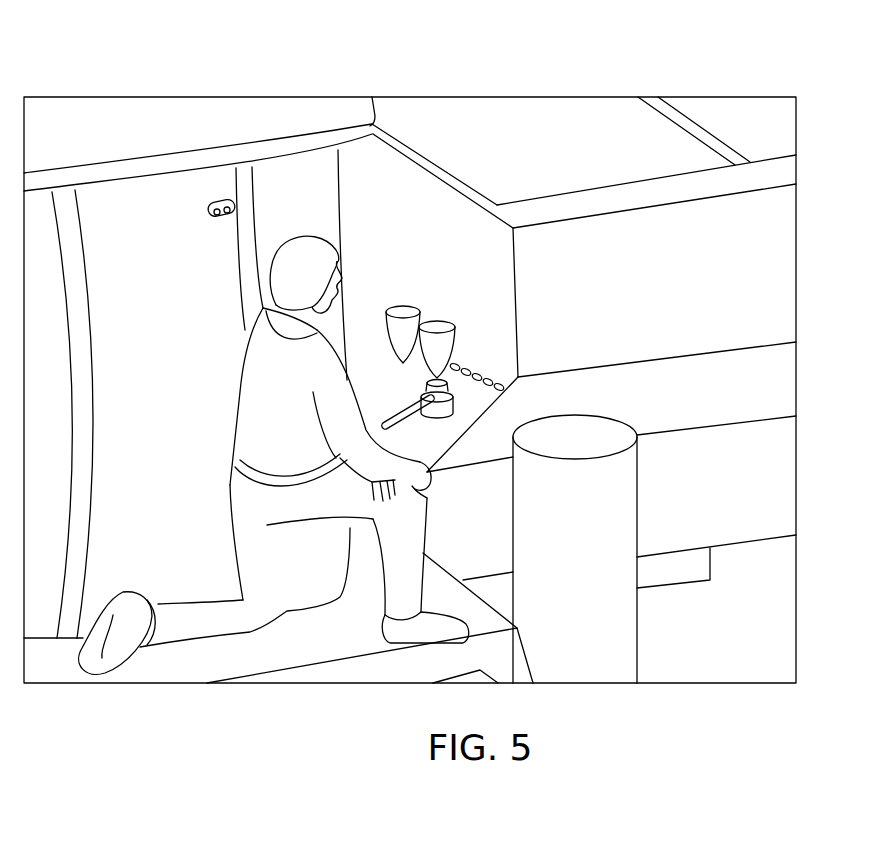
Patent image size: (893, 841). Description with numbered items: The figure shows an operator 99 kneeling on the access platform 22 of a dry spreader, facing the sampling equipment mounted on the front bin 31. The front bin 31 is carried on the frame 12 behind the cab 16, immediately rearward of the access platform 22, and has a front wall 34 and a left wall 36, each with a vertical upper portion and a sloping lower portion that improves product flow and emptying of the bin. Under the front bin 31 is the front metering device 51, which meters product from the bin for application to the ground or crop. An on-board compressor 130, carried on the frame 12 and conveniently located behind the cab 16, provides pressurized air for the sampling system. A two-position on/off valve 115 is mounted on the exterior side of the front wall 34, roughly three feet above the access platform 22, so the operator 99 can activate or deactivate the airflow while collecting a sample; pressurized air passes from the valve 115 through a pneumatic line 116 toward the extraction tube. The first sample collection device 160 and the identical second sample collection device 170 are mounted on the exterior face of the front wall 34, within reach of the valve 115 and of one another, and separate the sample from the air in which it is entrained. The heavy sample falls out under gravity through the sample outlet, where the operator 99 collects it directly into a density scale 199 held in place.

The frame 12 is at (770, 540).
The cab 16 is at (143, 123).
The access platform 22 is at (305, 650).
The front bin 31 is at (574, 148).
The front wall 34 is at (403, 210).
The left wall 36 is at (762, 285).
The front metering device 51 is at (697, 580).
The operator 99 is at (240, 377).
The valve 115 is at (468, 365).
The pneumatic line 116 is at (497, 377).
The compressor 130 is at (636, 493).
The first sample collection device 160 is at (437, 328).
The second sample collection device 170 is at (407, 308).
The density scale 199 is at (402, 405).